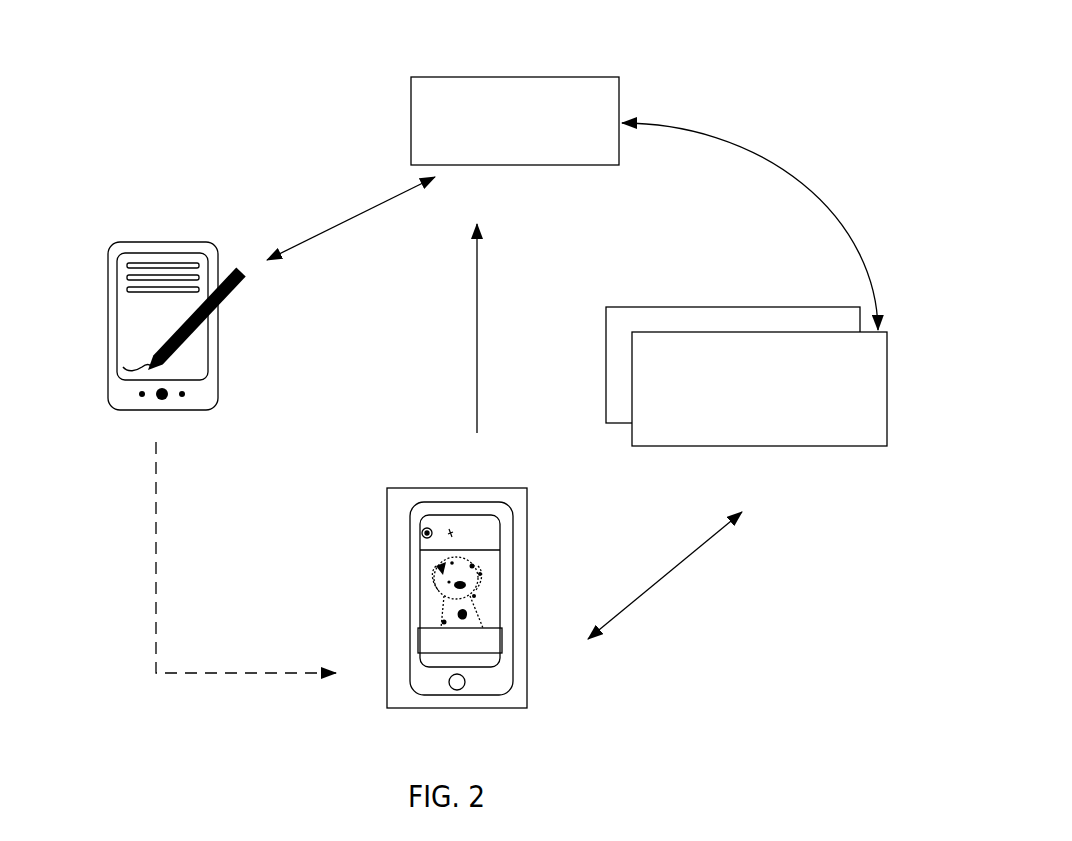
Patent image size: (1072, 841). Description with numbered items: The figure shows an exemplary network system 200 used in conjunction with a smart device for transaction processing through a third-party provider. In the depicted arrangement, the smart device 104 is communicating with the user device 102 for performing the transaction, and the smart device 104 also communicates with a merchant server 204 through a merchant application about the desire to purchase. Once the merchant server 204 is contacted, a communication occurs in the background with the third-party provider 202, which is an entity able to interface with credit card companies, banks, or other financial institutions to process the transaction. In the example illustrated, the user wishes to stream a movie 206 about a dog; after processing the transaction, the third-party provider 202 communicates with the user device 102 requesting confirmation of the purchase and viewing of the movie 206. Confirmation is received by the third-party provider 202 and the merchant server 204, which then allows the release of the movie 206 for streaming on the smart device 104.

The network system 200 is at (962, 86).
The merchant server 204 is at (515, 121).
The third-party provider 202 is at (746, 376).
The smart device 104 is at (205, 250).
The user device 102 is at (412, 558).
The movie 206 is at (412, 602).